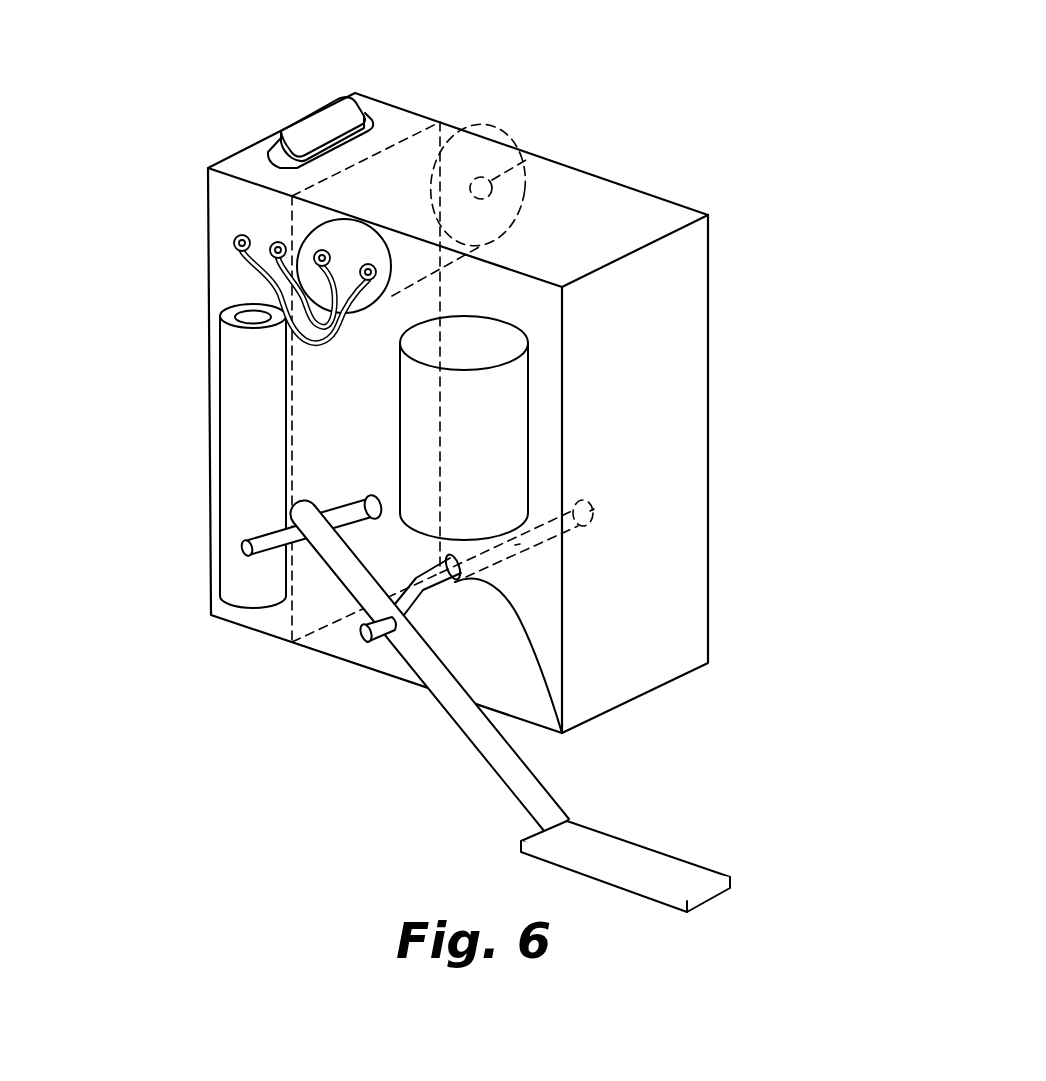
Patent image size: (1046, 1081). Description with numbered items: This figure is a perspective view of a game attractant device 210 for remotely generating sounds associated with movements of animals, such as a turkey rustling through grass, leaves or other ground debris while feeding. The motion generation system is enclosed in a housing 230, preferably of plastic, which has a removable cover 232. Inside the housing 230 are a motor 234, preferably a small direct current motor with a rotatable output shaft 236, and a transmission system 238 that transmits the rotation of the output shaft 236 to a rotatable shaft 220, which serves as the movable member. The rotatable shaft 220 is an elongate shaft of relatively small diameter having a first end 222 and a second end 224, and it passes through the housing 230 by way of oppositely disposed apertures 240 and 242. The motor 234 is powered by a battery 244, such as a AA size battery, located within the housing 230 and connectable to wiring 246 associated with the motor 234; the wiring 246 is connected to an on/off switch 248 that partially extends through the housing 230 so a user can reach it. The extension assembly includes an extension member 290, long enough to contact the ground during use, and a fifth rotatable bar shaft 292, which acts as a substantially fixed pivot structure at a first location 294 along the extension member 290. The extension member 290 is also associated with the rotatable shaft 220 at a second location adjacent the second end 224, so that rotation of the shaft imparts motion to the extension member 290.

The game attractant device 210 is at (533, 105).
The rotatable shaft 220 is at (517, 544).
The first end 222 is at (592, 511).
The second end 224 is at (367, 636).
The housing 230 is at (668, 202).
The removable cover 232 is at (587, 237).
The motor 234 is at (399, 193).
The rotatable output shaft 236 is at (526, 160).
The transmission system 238 is at (460, 437).
The aperture 240 is at (565, 730).
The aperture 242 is at (593, 525).
The battery 244 is at (237, 603).
The wiring 246 is at (276, 288).
The on/off switch 248 is at (308, 135).
The extension member 290 is at (472, 718).
The fifth rotatable bar shaft 292 is at (241, 548).
The first location 294 is at (284, 527).